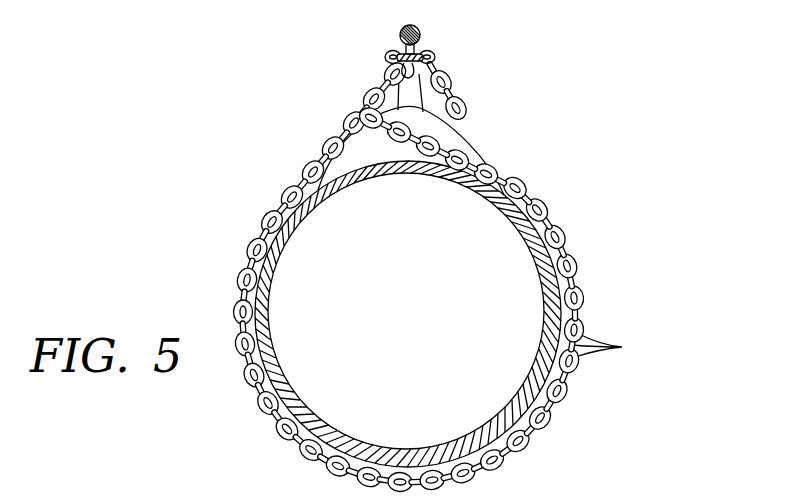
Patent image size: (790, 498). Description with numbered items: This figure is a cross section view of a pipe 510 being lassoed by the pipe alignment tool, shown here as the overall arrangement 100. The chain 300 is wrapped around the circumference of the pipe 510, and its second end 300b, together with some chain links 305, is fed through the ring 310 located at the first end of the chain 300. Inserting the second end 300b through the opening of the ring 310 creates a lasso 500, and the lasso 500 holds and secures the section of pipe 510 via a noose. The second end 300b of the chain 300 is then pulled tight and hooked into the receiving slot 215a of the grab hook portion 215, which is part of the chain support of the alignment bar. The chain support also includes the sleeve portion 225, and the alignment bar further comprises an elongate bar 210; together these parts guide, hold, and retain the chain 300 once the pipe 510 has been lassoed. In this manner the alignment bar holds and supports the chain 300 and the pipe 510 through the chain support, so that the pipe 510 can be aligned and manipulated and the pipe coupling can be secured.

The lifting system 100 is at (627, 492).
The elongate bar 210 is at (419, 28).
The grab hook portion 215 is at (434, 65).
The receiving slot 215a is at (386, 57).
The sleeve portion 225 is at (411, 25).
The chain 300 is at (585, 258).
The second end 300b is at (478, 112).
The chain links 305 is at (622, 347).
The ring 310 is at (375, 116).
The lasso 500 is at (203, 247).
The pipe 510 is at (378, 447).